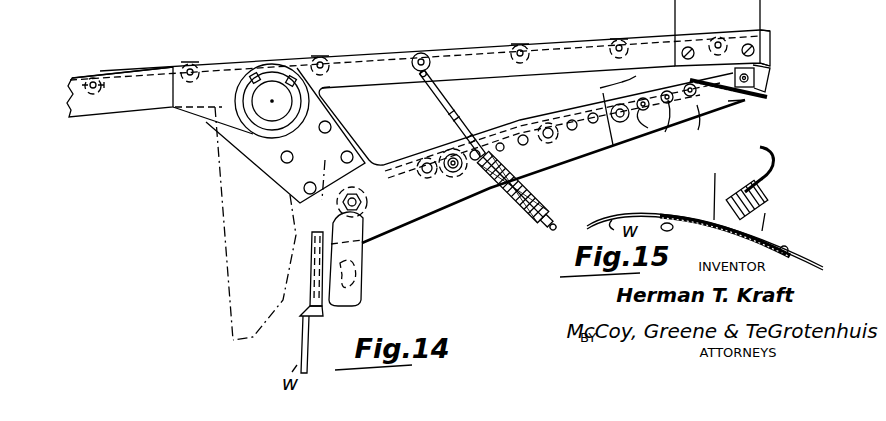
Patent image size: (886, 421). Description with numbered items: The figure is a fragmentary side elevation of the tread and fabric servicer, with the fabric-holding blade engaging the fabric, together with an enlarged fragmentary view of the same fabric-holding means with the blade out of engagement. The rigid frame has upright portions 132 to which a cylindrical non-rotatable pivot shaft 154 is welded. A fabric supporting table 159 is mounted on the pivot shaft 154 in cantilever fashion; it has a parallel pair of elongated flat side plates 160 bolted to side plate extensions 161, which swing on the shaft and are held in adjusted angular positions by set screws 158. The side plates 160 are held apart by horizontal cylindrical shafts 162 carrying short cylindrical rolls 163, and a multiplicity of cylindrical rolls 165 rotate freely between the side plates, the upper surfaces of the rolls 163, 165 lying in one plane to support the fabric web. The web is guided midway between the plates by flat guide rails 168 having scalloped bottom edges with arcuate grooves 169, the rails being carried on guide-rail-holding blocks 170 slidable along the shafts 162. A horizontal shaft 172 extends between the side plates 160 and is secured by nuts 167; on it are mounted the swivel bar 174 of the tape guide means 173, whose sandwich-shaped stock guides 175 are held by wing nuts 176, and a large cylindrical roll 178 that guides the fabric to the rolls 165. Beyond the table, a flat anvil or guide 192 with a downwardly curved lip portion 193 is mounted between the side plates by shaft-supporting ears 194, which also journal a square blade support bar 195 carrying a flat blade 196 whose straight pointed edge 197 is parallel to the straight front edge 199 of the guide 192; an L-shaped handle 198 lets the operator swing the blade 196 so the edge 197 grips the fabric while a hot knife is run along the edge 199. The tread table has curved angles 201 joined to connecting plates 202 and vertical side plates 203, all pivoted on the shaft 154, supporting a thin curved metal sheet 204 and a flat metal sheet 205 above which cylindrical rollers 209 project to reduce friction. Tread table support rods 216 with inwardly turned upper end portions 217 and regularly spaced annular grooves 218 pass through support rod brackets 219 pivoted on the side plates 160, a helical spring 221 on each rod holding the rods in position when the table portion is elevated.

In FIG. 14, the upright portions 132 is at (217, 204).
In FIG. 14, the pivot shaft 154 is at (253, 133).
In FIG. 14, the set screws 158 is at (296, 77).
In FIG. 14, the fabric supporting table 159 is at (448, 270).
In FIG. 14, the side plates 160 is at (424, 208).
In FIG. 14, the side plate extensions 161 is at (273, 147).
In FIG. 14, the horizontal cylindrical shafts 162 is at (621, 155).
In FIG. 14, the short cylindrical rolls 163 is at (468, 173).
In FIG. 14, the cylindrical rolls 165 is at (415, 160).
In FIG. 14, the nuts 167 is at (423, 0).
In FIG. 14, the guide rails 168 is at (620, 86).
In FIG. 14, the arcuate grooves 169 is at (669, 78).
In FIG. 14, the guide-rail-holding blocks 170 is at (648, 118).
In FIG. 14, the horizontal shaft 172 is at (367, 238).
In FIG. 14, the tape guide means 173 is at (294, 279).
In FIG. 14, the swivel bar 174 is at (358, 280).
In FIG. 14, the stock guides 175 is at (298, 368).
In FIG. 14, the wing nuts 176 is at (357, 311).
In FIG. 14, the large cylindrical roll 178 is at (368, 208).
In FIG. 14, the guide 192 is at (733, 101).
In FIG. 15, the guide 192 is at (690, 228).
In FIG. 15, the lip portion 193 is at (657, 213).
In FIG. 15, the shaft-supporting ears 194 is at (776, 180).
In FIG. 15, the blade support bar 195 is at (713, 220).
In FIG. 14, the blade 196 is at (767, 84).
In FIG. 15, the blade 196 is at (772, 192).
In FIG. 15, the pointed edge 197 is at (780, 215).
In FIG. 14, the L-shaped handle 198 is at (777, 67).
In FIG. 15, the L-shaped handle 198 is at (762, 150).
In FIG. 14, the front edge 199 is at (768, 102).
In FIG. 15, the front edge 199 is at (790, 240).
In FIG. 14, the curved angles 201 is at (102, 108).
In FIG. 14, the connecting plates 202 is at (213, 115).
In FIG. 14, the vertical side plates 203 is at (549, 53).
In FIG. 14, the curved metal sheet 204 is at (113, 68).
In FIG. 14, the flat metal sheet 205 is at (442, 56).
In FIG. 14, the cylindrical rollers 209 is at (192, 64).
In FIG. 14, the tread table support rods 216 is at (547, 258).
In FIG. 14, the inwardly turned upper end portions 217 is at (418, 71).
In FIG. 14, the annular grooves 218 is at (466, 107).
In FIG. 14, the support rod brackets 219 is at (540, 188).
In FIG. 14, the helical spring 221 is at (474, 207).